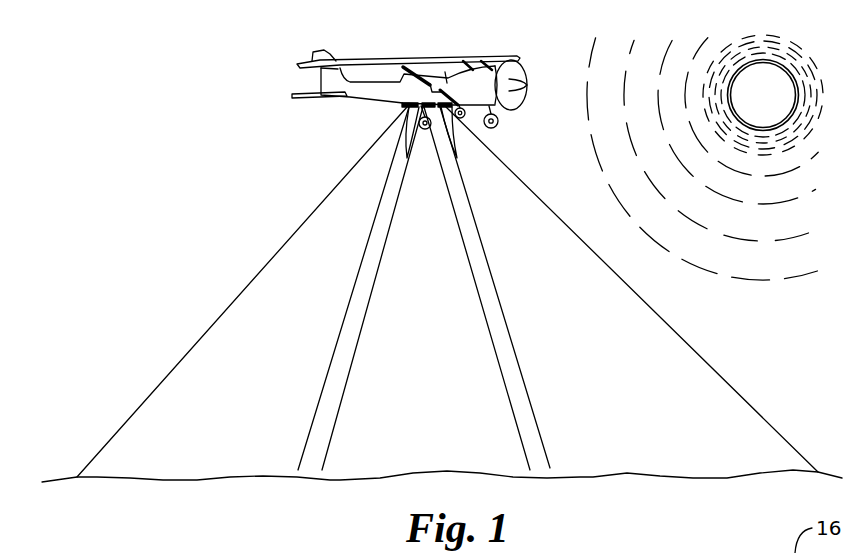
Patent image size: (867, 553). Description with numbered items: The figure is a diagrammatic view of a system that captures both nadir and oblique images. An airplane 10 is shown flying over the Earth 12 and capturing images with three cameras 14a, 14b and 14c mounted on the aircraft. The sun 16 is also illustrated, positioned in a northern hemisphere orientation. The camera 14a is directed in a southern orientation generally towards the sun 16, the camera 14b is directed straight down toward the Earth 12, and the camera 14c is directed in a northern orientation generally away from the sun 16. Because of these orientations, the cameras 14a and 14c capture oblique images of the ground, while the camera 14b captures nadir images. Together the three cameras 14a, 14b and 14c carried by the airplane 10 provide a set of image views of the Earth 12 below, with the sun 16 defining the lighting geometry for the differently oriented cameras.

The airplane 10 is at (423, 63).
The Earth 12 is at (783, 470).
The camera 14a is at (457, 158).
The camera 14b is at (407, 158).
The camera 14c is at (403, 105).
The sun 16 is at (752, 118).